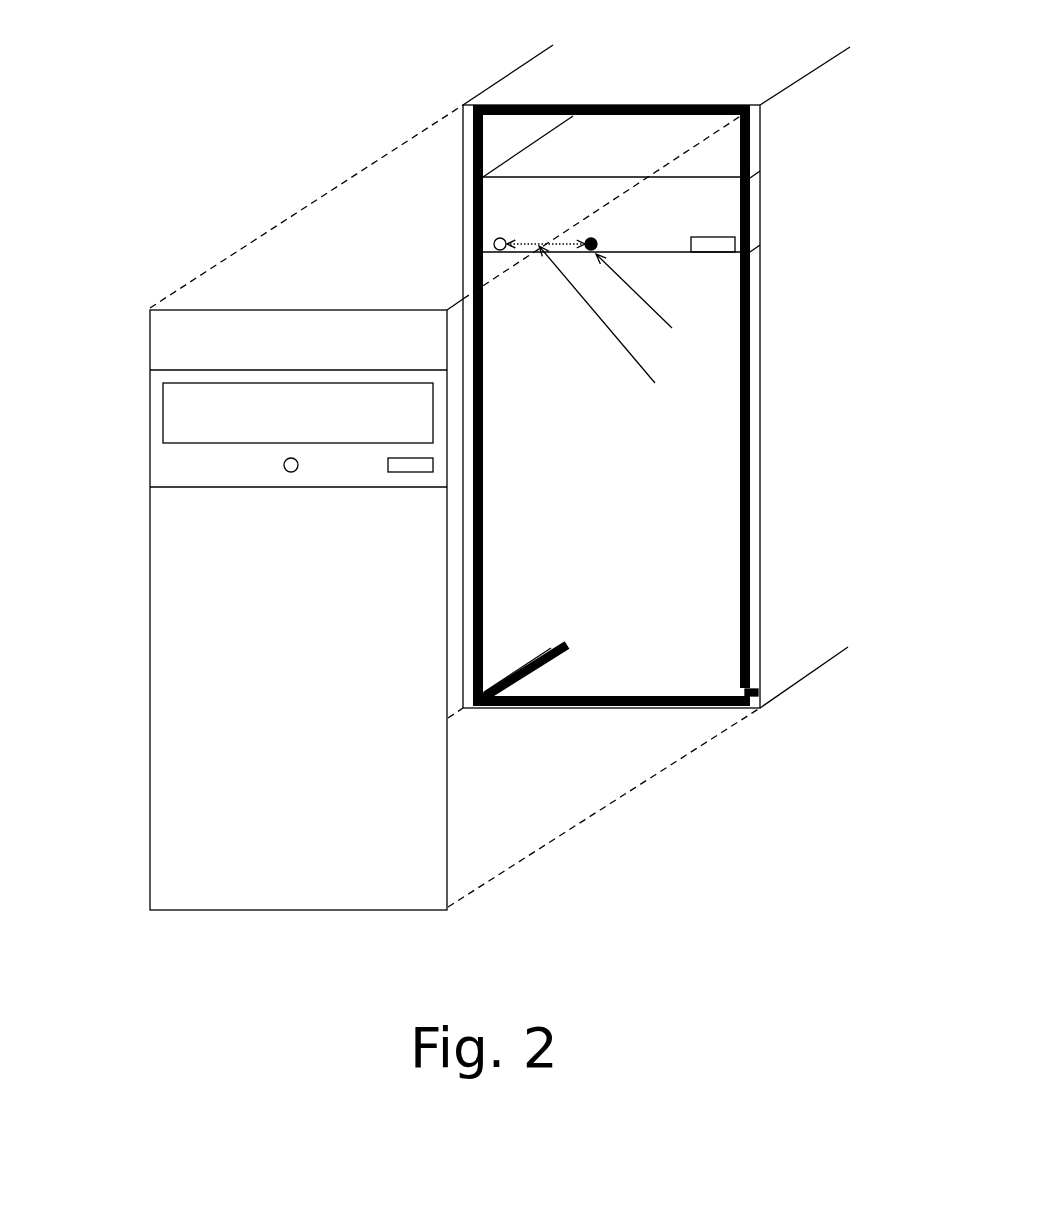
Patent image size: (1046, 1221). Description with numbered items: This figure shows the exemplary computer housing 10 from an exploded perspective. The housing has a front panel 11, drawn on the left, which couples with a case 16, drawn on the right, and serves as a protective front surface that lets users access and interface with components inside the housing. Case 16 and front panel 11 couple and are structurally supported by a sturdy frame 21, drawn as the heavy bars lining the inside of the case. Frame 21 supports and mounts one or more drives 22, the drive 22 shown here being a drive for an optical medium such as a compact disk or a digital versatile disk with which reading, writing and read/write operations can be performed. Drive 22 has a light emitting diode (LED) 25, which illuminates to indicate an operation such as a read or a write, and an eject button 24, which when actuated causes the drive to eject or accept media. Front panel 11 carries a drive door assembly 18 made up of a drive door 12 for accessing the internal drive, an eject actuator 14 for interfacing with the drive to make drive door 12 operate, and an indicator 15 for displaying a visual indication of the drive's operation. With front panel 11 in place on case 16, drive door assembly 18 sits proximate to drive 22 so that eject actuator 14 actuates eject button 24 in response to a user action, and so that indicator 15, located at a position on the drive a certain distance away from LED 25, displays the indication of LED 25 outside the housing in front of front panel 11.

The computer housing 10 is at (108, 77).
The front panel 11 is at (306, 341).
The drive door 12 is at (320, 414).
The eject actuator 14 is at (378, 479).
The indicator 15 is at (274, 471).
The case 16 is at (467, 93).
The drive door assembly 18 is at (150, 455).
The frame 21 is at (736, 573).
The drive 22 is at (571, 207).
The eject button 24 is at (719, 264).
The light emitting diode (LED) 25 is at (509, 259).